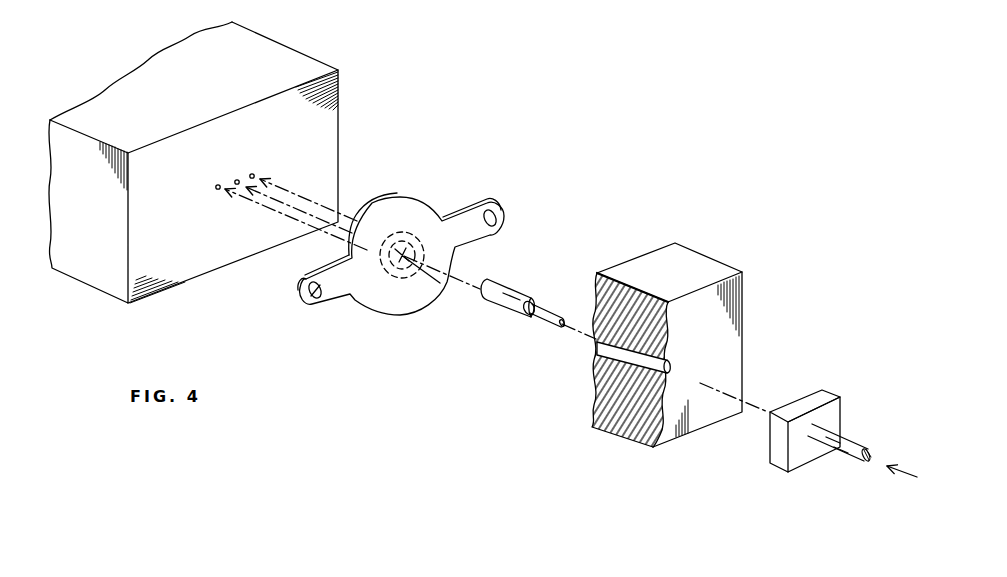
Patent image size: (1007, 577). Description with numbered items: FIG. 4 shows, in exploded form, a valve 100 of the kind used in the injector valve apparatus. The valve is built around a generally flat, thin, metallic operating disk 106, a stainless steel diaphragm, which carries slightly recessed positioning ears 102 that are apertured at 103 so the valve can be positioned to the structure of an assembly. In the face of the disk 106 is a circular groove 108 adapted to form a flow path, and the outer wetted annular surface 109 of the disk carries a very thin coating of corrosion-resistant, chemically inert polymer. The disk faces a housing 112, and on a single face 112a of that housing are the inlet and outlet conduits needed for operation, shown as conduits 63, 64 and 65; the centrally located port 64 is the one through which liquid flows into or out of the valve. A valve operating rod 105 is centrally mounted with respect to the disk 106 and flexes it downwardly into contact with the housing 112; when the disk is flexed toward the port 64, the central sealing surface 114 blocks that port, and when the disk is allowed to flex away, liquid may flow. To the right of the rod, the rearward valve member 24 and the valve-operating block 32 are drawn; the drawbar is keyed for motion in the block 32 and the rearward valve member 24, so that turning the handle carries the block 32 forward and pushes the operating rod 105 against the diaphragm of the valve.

The housing 112 is at (354, 52).
The single face of the housing 112a is at (323, 158).
The conduit 63 is at (255, 175).
The centrally located port 64 is at (240, 178).
The conduit 65 is at (215, 187).
The valve 100 is at (418, 245).
The operating disk 106 is at (423, 192).
The positioning ears 102 is at (338, 279).
The aperture 103 is at (311, 294).
The circular groove 108 is at (420, 247).
The outer wetted annular surface 109 is at (408, 305).
The central sealing surface 114 is at (420, 263).
The valve operating rod 105 is at (512, 315).
The rearward valve member 24 is at (717, 272).
The valve-operating block 32 is at (823, 398).